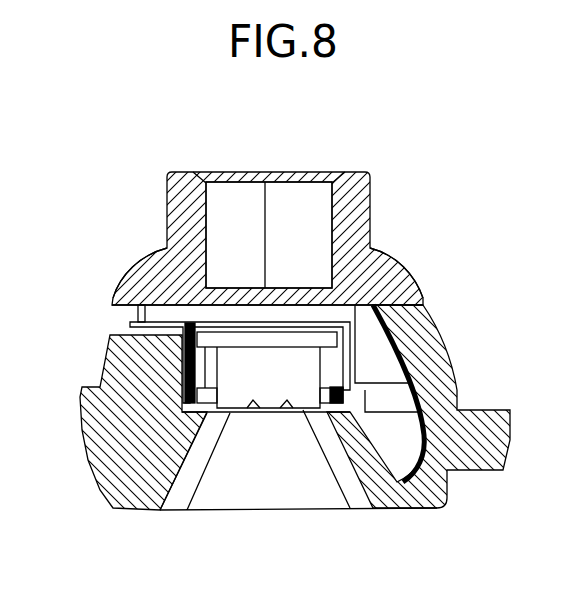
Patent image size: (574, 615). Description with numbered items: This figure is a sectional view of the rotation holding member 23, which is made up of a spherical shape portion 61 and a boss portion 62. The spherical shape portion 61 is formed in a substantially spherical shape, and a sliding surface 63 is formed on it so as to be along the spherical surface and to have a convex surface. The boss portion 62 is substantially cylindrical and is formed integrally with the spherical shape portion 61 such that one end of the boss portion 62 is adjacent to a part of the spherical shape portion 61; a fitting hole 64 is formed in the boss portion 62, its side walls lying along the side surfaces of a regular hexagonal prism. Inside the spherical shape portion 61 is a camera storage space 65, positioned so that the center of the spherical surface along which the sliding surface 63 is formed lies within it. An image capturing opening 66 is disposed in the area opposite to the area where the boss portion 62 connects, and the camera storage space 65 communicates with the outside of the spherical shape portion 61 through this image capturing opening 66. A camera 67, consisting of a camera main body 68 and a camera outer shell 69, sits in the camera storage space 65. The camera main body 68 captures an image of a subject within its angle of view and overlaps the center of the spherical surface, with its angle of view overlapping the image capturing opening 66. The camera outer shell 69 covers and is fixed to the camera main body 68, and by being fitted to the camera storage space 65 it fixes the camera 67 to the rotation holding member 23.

The rotation holding member 23 is at (128, 166).
The spherical shape portion 61 is at (137, 270).
The boss portion 62 is at (371, 198).
The sliding surface 63 is at (90, 473).
The fitting hole 64 is at (297, 195).
The camera storage space 65 is at (197, 360).
The image capturing opening 66 is at (271, 508).
The camera 67 is at (335, 347).
The camera main body 68 is at (313, 365).
The camera outer shell 69 is at (327, 340).